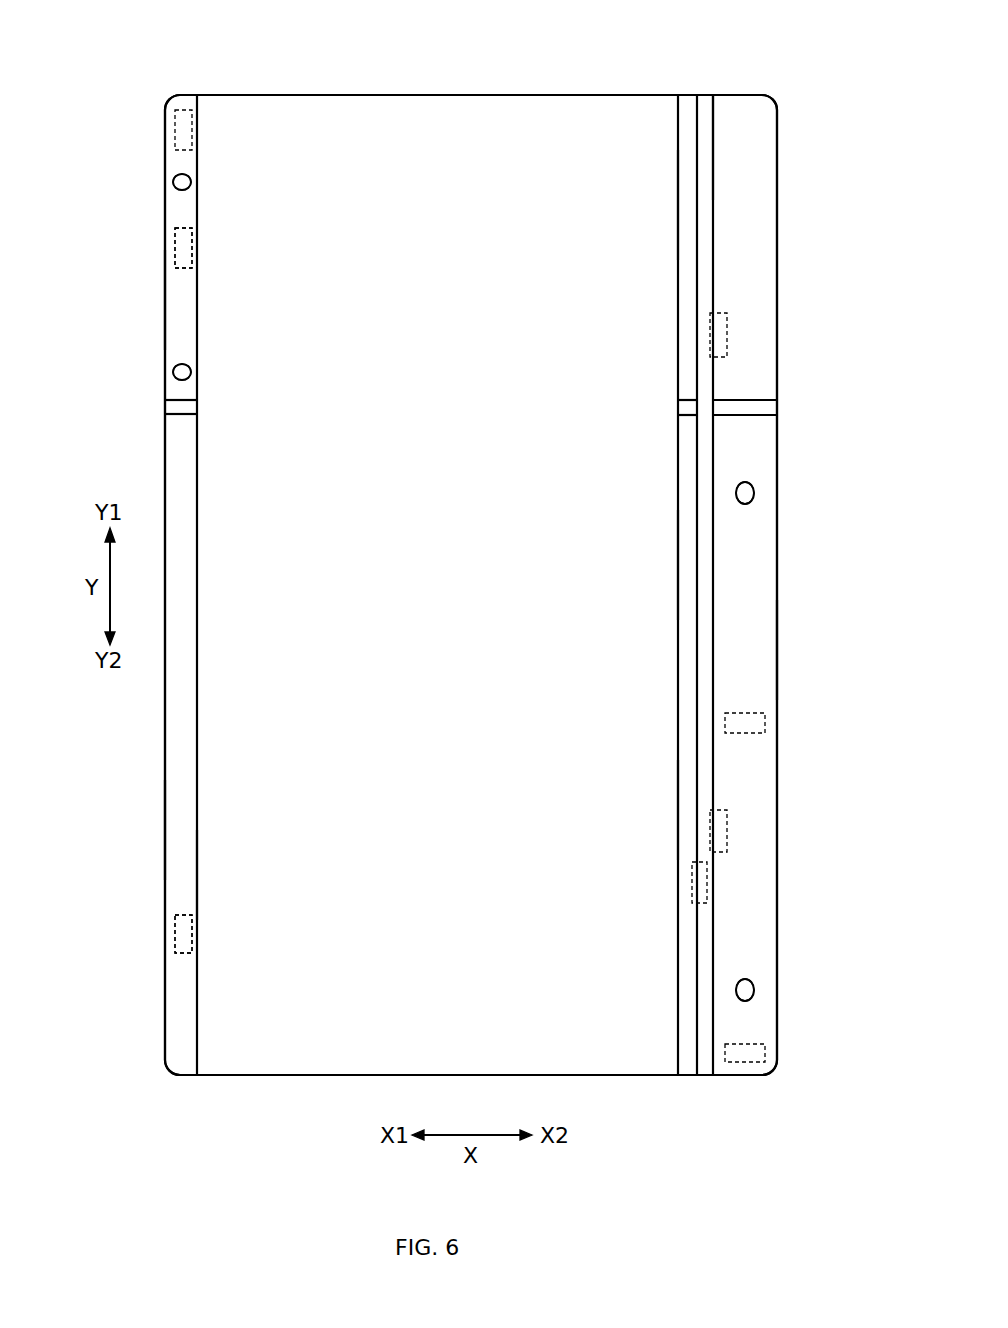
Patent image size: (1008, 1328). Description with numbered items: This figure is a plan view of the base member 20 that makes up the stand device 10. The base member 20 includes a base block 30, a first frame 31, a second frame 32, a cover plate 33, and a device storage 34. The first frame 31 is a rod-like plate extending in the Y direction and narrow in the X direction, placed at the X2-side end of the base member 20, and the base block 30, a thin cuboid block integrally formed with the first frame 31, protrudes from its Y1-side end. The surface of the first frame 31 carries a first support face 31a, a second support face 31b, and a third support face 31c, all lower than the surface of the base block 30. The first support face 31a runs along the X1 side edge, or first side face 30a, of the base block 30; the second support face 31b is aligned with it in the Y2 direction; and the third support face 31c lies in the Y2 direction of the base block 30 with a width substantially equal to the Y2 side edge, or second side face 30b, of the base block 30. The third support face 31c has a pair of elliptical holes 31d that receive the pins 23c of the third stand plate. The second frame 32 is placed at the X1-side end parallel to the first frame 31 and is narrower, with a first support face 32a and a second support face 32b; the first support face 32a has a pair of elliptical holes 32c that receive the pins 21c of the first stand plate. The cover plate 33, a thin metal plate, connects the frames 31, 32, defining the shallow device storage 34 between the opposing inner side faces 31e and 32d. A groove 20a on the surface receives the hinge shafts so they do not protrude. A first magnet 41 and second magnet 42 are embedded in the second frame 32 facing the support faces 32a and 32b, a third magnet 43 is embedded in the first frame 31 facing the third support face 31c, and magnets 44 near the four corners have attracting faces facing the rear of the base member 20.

The stand device 10 is at (106, 26).
The base member 20 is at (373, 82).
The groove 20a is at (185, 407).
The pins 21c is at (174, 181).
The pins 23c is at (736, 491).
The base block 30 is at (760, 213).
The first side face 30a is at (710, 125).
The second side face 30b is at (740, 400).
The first frame 31 is at (777, 558).
The first support face 31a is at (688, 209).
The second support face 31b is at (688, 565).
The third support face 31c is at (760, 655).
The holes 31d is at (754, 494).
The inner side face 31e is at (688, 804).
The second frame 32 is at (166, 741).
The first support face 32a is at (168, 300).
The second support face 32b is at (180, 833).
The holes 32c is at (190, 181).
The inner side face 32d is at (197, 872).
The cover plate 33 is at (287, 1075).
The device storage 34 is at (423, 732).
The first magnet 41 is at (174, 122).
The second magnet 42 is at (175, 935).
The third magnet 43 is at (765, 723).
The magnets 44 is at (727, 335).